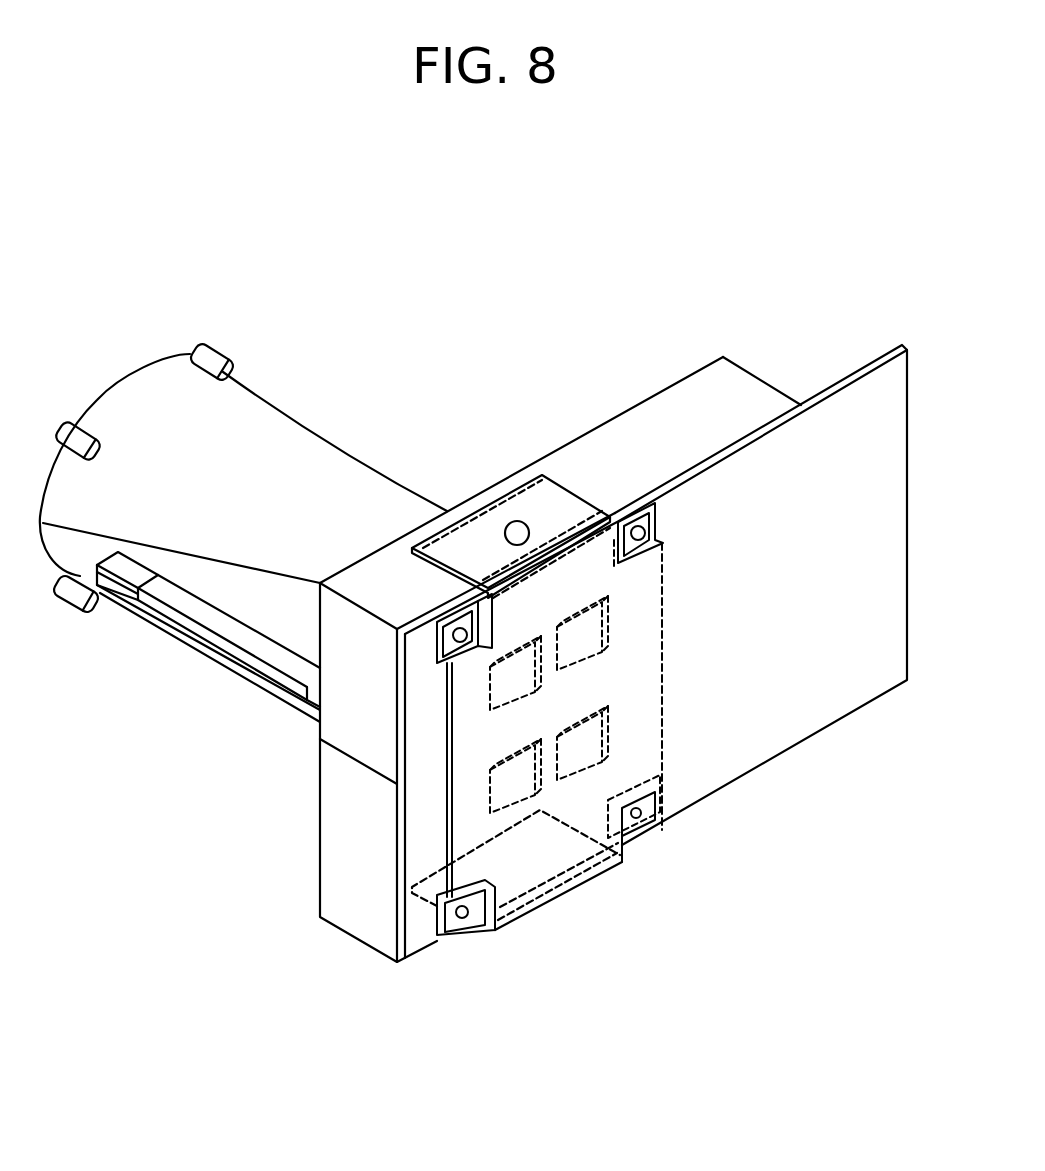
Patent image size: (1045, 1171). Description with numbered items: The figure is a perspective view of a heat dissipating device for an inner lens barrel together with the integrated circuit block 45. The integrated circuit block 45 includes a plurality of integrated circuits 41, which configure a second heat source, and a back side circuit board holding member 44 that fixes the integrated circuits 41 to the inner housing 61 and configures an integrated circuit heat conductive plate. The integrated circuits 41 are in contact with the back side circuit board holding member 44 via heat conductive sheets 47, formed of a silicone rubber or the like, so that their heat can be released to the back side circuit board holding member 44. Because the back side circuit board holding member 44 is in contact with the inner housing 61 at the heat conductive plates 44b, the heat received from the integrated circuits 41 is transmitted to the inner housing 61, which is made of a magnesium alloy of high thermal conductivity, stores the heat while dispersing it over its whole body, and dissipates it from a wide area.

The integrated circuits 41 is at (490, 680).
The back side circuit board holding member 44 is at (628, 703).
The heat conductive plates 44b is at (517, 515).
The integrated circuit block 45 is at (554, 915).
The heat conductive sheets 47 is at (485, 682).
The inner housing 61 is at (667, 432).